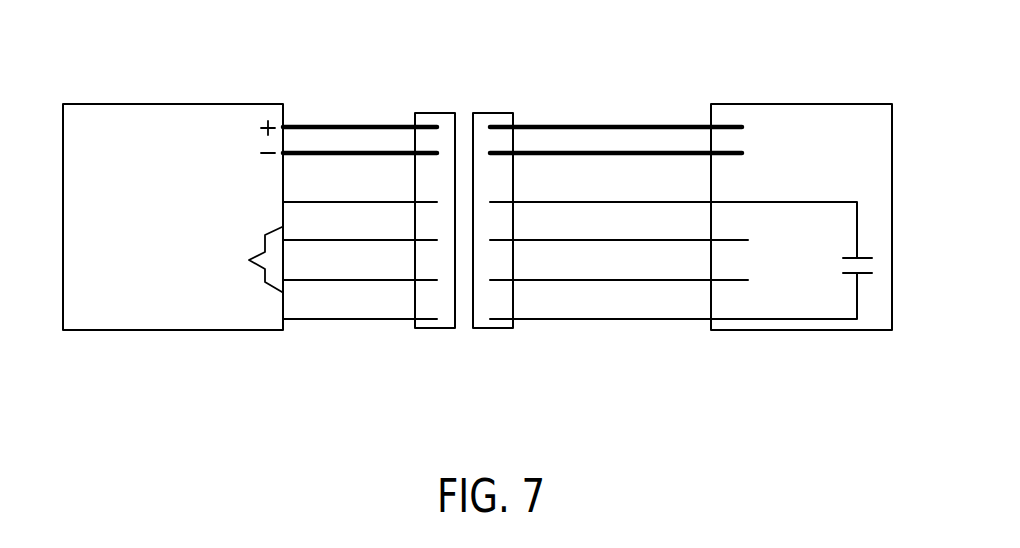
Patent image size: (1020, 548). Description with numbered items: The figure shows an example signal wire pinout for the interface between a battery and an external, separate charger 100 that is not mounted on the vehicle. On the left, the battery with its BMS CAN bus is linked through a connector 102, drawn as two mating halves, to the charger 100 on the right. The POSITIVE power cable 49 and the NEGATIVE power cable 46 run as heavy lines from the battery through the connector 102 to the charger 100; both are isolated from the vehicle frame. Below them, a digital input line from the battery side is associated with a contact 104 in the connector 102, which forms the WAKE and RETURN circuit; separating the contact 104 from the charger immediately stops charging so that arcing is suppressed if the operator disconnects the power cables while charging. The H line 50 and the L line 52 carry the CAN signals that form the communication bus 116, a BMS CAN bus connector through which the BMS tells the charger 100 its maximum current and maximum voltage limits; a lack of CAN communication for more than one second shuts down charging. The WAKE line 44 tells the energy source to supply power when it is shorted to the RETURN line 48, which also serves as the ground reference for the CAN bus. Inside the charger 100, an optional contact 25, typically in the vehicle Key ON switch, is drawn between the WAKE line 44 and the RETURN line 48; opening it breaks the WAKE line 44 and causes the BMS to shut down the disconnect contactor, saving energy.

The connector 102 is at (503, 39).
The communication bus 116 is at (115, 276).
The charger 100 is at (813, 122).
The contact 104 is at (360, 195).
The positive power cable 49 is at (615, 125).
The negative power cable 46 is at (592, 150).
The WAKE line 44 is at (673, 200).
The H line 50 is at (372, 241).
The L line 52 is at (305, 281).
The RETURN line 48 is at (685, 320).
The contact 25 is at (862, 257).